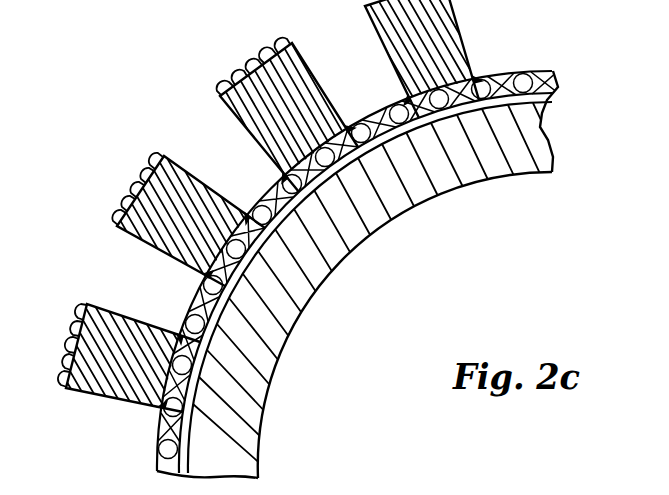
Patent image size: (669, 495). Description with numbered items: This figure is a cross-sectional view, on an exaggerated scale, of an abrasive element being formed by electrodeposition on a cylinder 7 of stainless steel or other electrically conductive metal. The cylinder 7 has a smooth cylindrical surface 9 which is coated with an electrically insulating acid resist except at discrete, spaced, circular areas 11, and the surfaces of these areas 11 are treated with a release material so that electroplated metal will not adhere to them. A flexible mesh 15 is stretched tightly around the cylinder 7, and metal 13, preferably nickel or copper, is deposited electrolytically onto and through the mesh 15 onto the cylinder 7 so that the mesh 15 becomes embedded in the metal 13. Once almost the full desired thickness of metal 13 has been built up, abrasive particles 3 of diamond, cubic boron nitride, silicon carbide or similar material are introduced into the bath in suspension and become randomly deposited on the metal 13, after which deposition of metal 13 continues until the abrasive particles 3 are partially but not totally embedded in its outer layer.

The abrasive particles 3 is at (152, 165).
The cylinder 7 is at (303, 294).
The smooth cylindrical surface 9 is at (528, 100).
The discrete spaced areas 11 is at (463, 107).
The metal 13 is at (303, 77).
The mesh 15 is at (194, 295).